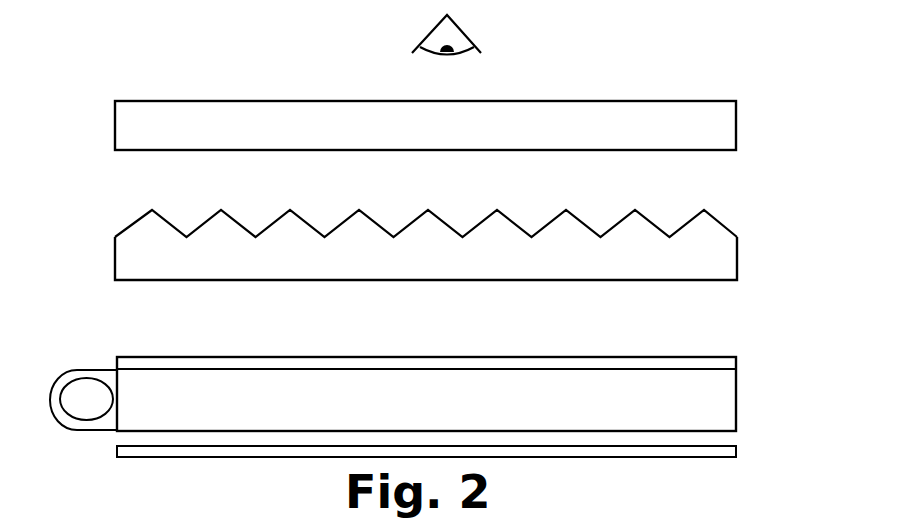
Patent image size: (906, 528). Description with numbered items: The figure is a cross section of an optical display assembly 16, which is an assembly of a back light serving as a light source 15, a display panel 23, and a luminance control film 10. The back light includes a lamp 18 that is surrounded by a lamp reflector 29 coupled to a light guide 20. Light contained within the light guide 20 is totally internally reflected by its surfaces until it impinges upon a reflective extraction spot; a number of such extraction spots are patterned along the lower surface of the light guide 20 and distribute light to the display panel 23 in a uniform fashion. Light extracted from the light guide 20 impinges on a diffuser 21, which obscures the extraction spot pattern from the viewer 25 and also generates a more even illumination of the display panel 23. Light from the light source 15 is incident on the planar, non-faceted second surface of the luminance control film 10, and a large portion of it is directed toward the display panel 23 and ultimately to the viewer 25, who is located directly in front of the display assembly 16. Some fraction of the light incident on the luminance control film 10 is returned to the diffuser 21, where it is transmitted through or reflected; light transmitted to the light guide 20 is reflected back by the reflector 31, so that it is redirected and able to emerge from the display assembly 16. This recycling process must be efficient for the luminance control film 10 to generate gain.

The luminance control film 10 is at (423, 223).
The light source 15 is at (426, 409).
The optical display assembly 16 is at (96, 237).
The lamp 18 is at (85, 426).
The light guide 20 is at (723, 412).
The diffuser 21 is at (643, 355).
The display panel 23 is at (720, 128).
The viewer 25 is at (456, 27).
The lamp reflector 29 is at (77, 398).
The reflector 31 is at (637, 458).